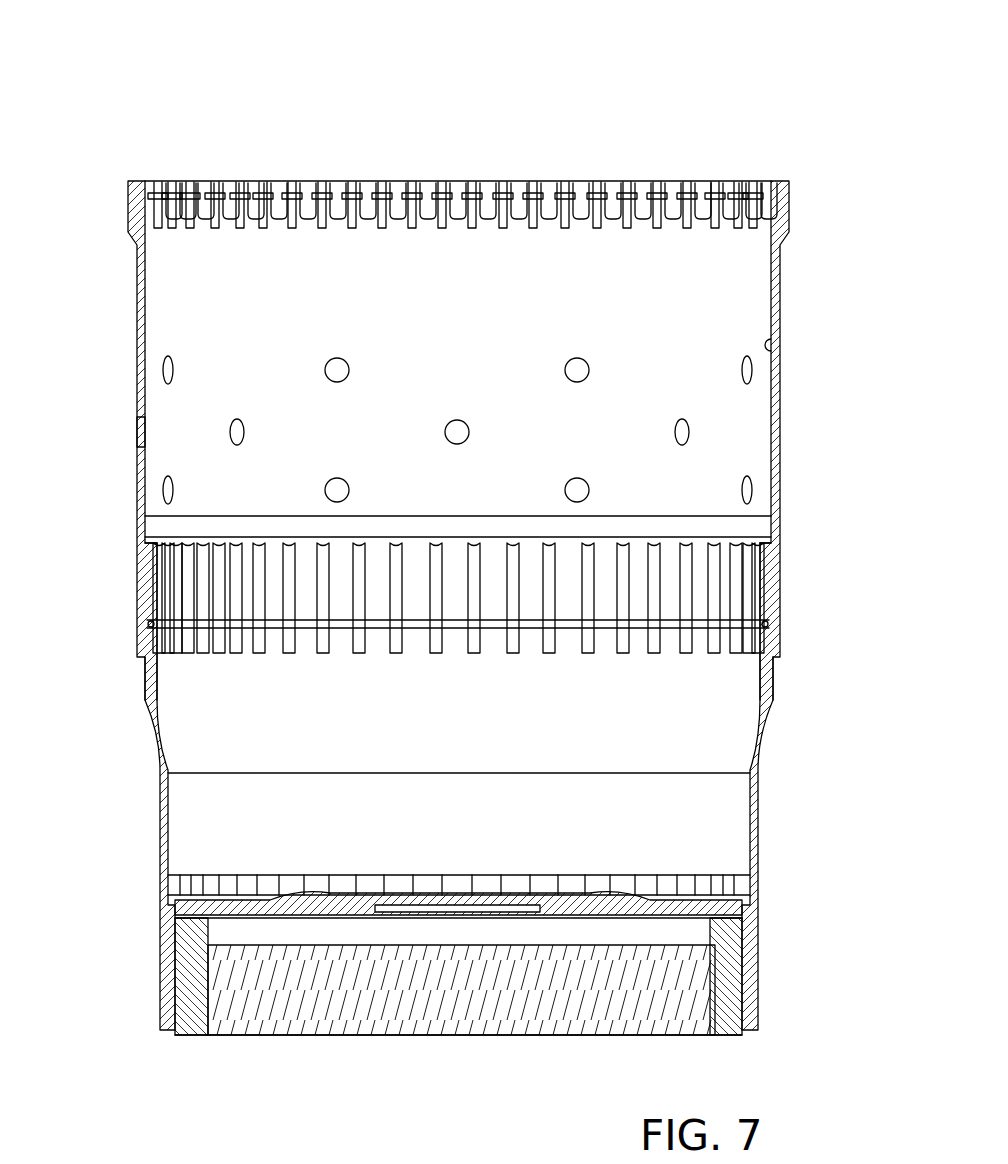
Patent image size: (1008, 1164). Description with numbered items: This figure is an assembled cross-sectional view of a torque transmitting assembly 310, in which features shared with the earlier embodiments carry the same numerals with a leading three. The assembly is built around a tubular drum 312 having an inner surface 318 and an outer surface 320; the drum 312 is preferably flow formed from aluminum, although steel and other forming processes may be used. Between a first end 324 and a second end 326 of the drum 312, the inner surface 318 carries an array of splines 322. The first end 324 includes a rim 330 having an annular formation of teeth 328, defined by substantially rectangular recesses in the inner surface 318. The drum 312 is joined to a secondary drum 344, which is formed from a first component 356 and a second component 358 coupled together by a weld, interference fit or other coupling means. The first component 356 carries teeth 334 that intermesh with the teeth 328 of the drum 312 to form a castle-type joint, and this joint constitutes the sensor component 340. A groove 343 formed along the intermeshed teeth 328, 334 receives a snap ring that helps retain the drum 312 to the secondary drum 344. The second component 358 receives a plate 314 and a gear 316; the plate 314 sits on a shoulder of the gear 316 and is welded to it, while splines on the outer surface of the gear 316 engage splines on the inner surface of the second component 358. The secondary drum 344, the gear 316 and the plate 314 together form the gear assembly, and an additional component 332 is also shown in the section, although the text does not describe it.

The torque transmitting assembly 310 is at (466, 562).
The drum 312 is at (794, 318).
The plate 314 is at (742, 912).
The gear 316 is at (750, 966).
The inner surface 318 is at (771, 345).
The outer surface 320 is at (780, 383).
The splines 322 is at (692, 590).
The first end 324 is at (137, 660).
The second end 326 is at (777, 182).
The teeth 328 is at (458, 652).
The rim 330 is at (775, 653).
The filter element 332 is at (340, 990).
The teeth 334 is at (262, 658).
The sensor component 340 is at (137, 652).
The groove 343 is at (556, 610).
The secondary drum 344 is at (546, 793).
The first component 356 is at (768, 742).
The second component 358 is at (512, 827).